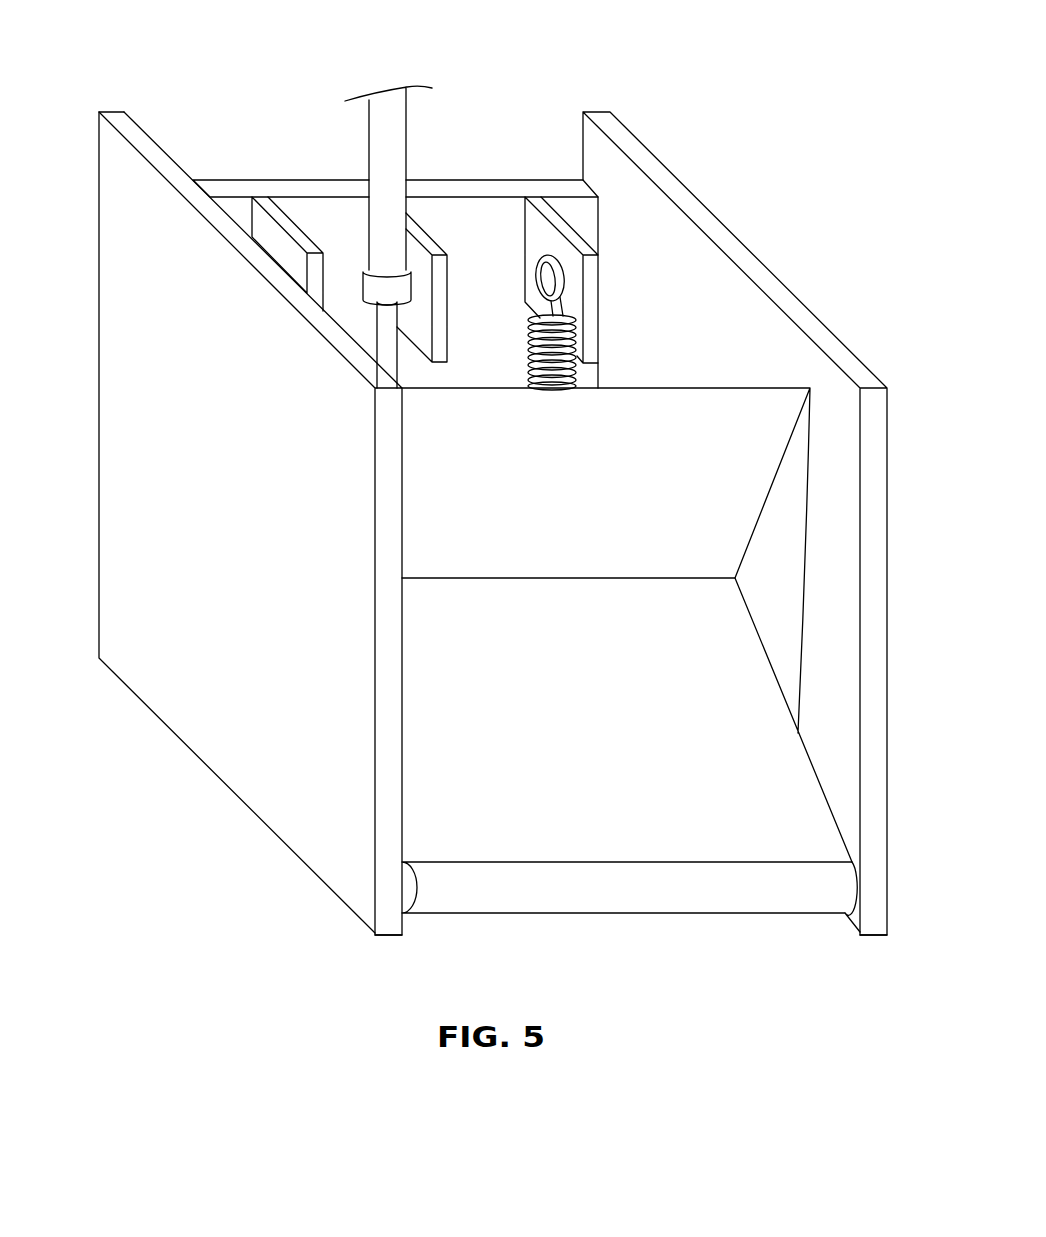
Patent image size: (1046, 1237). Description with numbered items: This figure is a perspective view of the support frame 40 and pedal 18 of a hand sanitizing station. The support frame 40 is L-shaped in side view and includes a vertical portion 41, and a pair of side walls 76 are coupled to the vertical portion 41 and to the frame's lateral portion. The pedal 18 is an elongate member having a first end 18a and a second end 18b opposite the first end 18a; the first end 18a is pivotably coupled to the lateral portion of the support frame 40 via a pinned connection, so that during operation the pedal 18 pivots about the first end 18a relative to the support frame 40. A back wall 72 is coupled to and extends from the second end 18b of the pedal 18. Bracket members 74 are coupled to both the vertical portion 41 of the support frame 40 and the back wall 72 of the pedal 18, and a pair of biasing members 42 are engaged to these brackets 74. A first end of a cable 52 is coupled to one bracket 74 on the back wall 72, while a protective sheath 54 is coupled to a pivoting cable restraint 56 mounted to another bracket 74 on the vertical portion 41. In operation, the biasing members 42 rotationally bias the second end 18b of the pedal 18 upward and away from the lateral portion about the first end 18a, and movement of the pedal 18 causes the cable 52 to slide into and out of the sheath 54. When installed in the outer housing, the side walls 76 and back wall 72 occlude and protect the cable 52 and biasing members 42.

The support frame 40 is at (124, 94).
The side walls 76 is at (130, 178).
The vertical portion 41 is at (332, 180).
The protective sheath 54 is at (407, 122).
The pivoting cable restraint 56 is at (363, 273).
The cable 52 is at (397, 362).
The bracket members 74 is at (272, 200).
The biasing members 42 is at (530, 333).
The back wall 72 is at (688, 412).
The pedal 18 is at (753, 752).
The first end 18a is at (863, 850).
The second end 18b is at (566, 598).